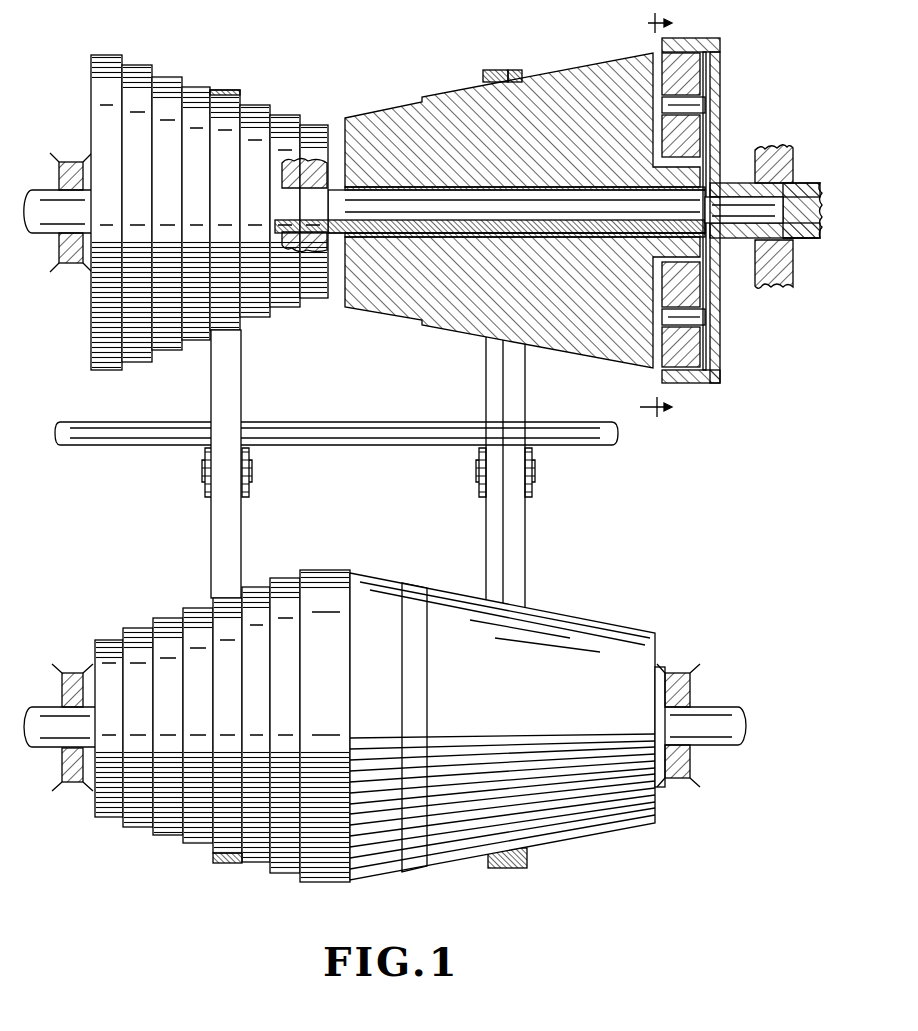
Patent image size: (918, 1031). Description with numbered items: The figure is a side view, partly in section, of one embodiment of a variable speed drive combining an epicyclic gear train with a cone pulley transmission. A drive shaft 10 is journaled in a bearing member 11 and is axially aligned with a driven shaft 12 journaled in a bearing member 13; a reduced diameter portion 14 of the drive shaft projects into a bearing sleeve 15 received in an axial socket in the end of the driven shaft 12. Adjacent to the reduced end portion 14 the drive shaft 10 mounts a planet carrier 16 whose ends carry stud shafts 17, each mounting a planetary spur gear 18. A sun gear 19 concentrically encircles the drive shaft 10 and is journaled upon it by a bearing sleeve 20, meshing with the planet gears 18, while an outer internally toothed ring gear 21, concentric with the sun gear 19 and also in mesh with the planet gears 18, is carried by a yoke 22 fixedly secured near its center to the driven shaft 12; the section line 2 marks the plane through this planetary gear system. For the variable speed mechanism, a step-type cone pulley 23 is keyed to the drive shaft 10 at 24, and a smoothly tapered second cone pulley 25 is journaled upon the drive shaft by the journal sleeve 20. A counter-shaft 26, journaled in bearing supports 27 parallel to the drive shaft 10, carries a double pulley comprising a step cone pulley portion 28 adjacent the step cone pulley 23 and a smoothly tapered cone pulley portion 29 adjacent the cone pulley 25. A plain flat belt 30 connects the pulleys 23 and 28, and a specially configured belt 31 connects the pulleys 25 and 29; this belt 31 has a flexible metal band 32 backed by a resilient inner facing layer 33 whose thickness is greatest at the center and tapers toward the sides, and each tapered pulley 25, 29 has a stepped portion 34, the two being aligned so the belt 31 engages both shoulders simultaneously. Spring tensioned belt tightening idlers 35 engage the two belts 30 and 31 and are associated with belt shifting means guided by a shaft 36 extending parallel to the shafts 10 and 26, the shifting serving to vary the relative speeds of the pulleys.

The section line 2 is at (665, 217).
The drive shaft 10 is at (52, 232).
The bearing member 11 is at (70, 162).
The driven shaft 12 is at (812, 240).
The bearing member 13 is at (782, 278).
The reduced diameter portion 14 is at (800, 186).
The bearing sleeve 15 is at (742, 228).
The planet carrier 16 is at (718, 124).
The stud shaft 17 is at (692, 103).
The planetary spur gear 18 is at (672, 68).
The sun gear 19 is at (714, 176).
The bearing sleeve 20 is at (760, 172).
The ring gear 21 is at (702, 380).
The yoke 22 is at (722, 354).
The cone pulley 23 is at (257, 112).
The key 24 is at (316, 240).
The second cone pulley 25 is at (438, 117).
The counter-shaft 26 is at (718, 718).
The bearing support 27 is at (70, 775).
The step cone pulley portion 28 is at (172, 828).
The cone pulley portion 29 is at (605, 823).
The belt 30 is at (232, 538).
The belt 31 is at (518, 545).
The flexible metal band 32 is at (495, 70).
The resilient inner facing layer 33 is at (522, 74).
The stepped portion 34 is at (410, 590).
The belt tightening idler 35 is at (205, 490).
The shaft 36 is at (357, 433).